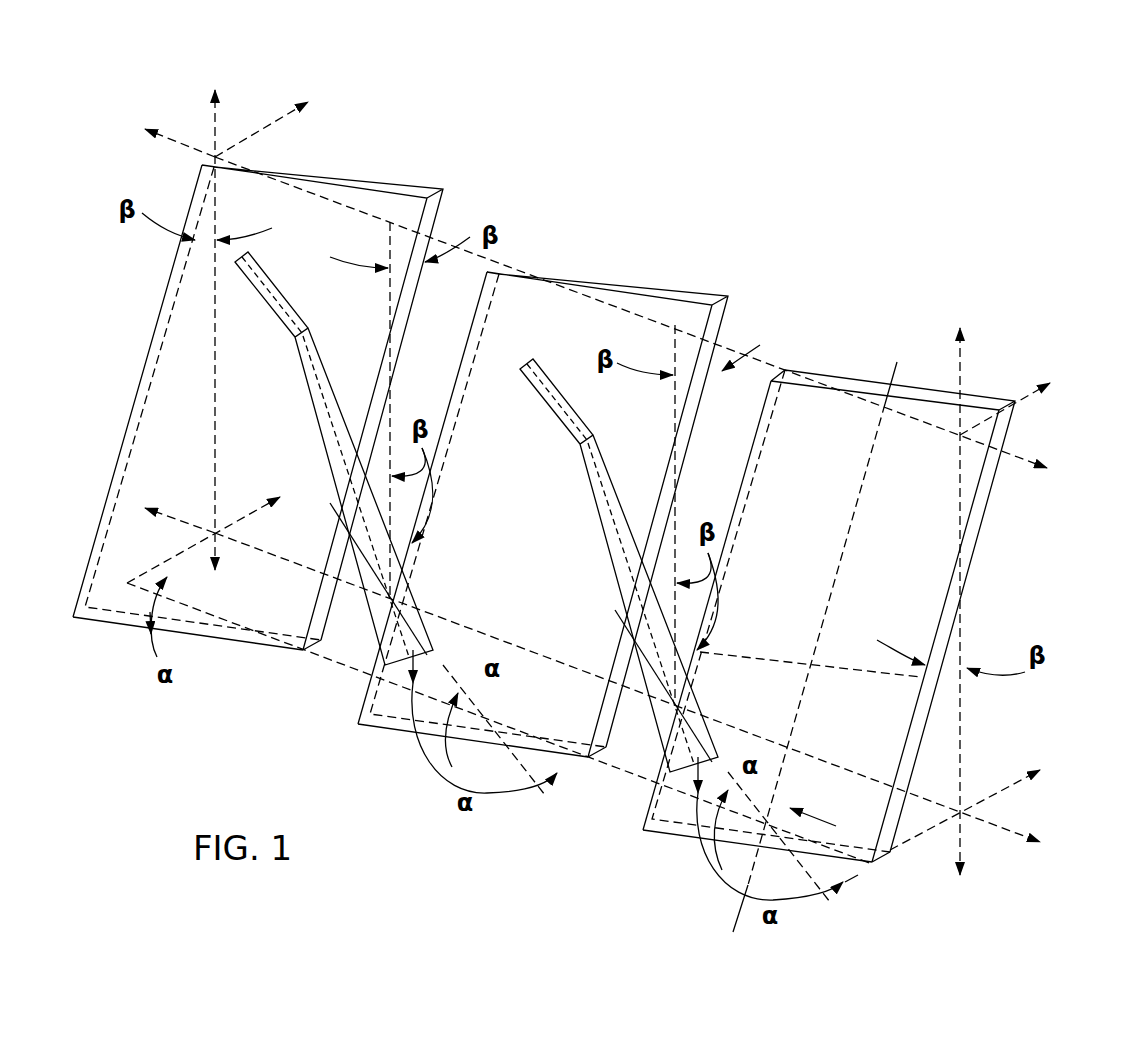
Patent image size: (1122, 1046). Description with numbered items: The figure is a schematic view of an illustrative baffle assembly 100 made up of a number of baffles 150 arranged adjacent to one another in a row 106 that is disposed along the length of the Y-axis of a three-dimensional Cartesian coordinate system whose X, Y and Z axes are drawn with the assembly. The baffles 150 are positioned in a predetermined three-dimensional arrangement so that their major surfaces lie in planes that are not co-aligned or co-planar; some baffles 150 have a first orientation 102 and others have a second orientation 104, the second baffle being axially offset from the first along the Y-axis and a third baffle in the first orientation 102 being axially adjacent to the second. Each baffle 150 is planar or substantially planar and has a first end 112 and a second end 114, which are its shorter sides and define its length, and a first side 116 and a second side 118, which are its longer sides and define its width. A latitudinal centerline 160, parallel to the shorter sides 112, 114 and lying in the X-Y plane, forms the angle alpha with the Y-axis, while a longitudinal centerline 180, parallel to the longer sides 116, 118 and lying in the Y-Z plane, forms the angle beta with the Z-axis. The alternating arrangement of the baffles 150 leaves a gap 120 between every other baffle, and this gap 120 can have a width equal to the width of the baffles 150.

The baffle assembly 100 is at (955, 198).
The first orientation 102 is at (233, 423).
The second orientation 104 is at (325, 512).
The row 106 is at (593, 180).
The first end 112 is at (310, 655).
The second end 114 is at (287, 297).
The first side 116 is at (979, 540).
The second side 118 is at (746, 470).
The gap 120 is at (443, 310).
The baffle 150 is at (952, 612).
The latitudinal centerline 160 is at (770, 657).
The longitudinal centerline 180 is at (737, 905).